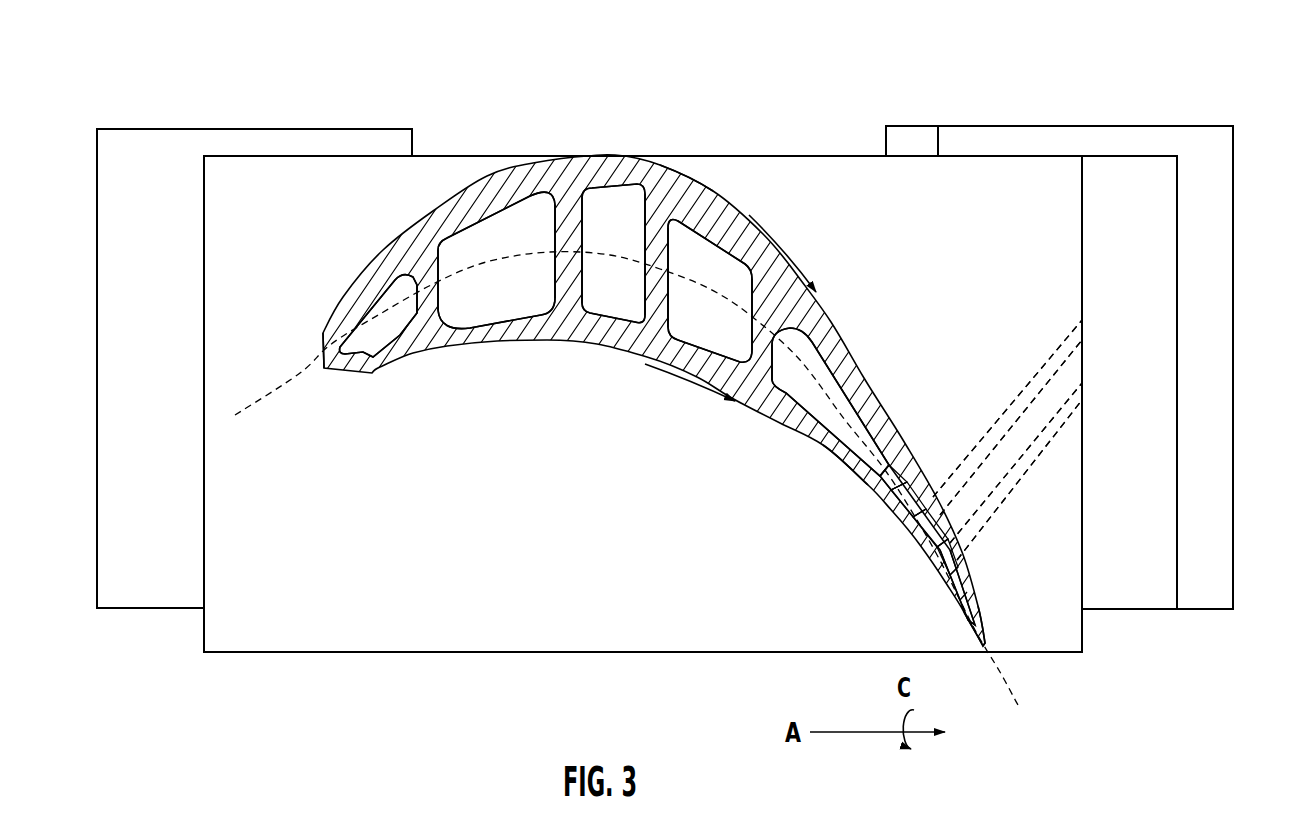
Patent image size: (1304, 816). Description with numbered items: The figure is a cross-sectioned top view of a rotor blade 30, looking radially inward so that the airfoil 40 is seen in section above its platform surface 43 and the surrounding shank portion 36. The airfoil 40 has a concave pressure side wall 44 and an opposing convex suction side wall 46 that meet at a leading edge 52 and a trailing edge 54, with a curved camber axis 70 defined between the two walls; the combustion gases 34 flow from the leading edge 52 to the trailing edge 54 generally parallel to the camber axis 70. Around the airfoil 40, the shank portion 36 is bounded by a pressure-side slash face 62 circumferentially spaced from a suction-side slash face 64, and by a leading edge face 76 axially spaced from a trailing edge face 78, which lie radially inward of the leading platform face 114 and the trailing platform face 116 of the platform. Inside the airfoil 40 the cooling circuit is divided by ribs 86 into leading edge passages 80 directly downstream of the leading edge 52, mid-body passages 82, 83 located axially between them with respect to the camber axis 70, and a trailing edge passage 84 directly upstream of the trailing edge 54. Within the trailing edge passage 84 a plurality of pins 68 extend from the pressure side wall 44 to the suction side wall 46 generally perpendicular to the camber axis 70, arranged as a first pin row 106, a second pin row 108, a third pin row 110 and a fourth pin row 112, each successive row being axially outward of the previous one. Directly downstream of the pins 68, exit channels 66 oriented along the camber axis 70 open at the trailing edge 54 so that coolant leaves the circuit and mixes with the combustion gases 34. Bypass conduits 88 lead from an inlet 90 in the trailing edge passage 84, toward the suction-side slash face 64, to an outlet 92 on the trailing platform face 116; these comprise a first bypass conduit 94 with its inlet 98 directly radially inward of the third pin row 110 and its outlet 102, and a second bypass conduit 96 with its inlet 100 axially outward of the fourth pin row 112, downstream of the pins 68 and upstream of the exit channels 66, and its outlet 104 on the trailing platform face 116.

The rotor blade 30 is at (218, 70).
The combustion gases 34 is at (780, 252).
The shank portion 36 is at (1247, 222).
The airfoil 40 is at (330, 222).
The platform surface 43 is at (243, 633).
The pressure side wall 44 is at (829, 465).
The suction side wall 46 is at (693, 187).
The leading edge 52 is at (325, 370).
The trailing edge 54 is at (988, 633).
The pressure-side slash face 62 is at (318, 656).
The suction-side slash face 64 is at (680, 156).
The exit channels 66 is at (957, 620).
The pins 68 is at (900, 524).
The camber axis 70 is at (260, 397).
The leading edge face 76 is at (202, 281).
The trailing edge face 78 is at (1084, 240).
The leading edge passages 80 is at (447, 274).
The mid-body passage 82 is at (613, 253).
The mid-body passage 83 is at (710, 291).
The trailing edge passage 84 is at (830, 402).
The ribs 86 is at (428, 268).
The bypass conduits 88 is at (1007, 440).
The inlet 90 is at (994, 465).
The outlet 92 is at (1105, 340).
The first bypass conduit 94 is at (1001, 414).
The second bypass conduit 96 is at (992, 515).
The inlet of first bypass conduit 98 is at (937, 493).
The inlet of second bypass conduit 100 is at (959, 556).
The outlet of first bypass conduit 102 is at (1086, 332).
The outlet of second bypass conduit 104 is at (1087, 398).
The first pin row 106 is at (871, 458).
The second pin row 108 is at (890, 498).
The third pin row 110 is at (906, 531).
The fourth pin row 112 is at (927, 541).
The leading platform face 114 is at (204, 553).
The trailing platform face 116 is at (1086, 557).